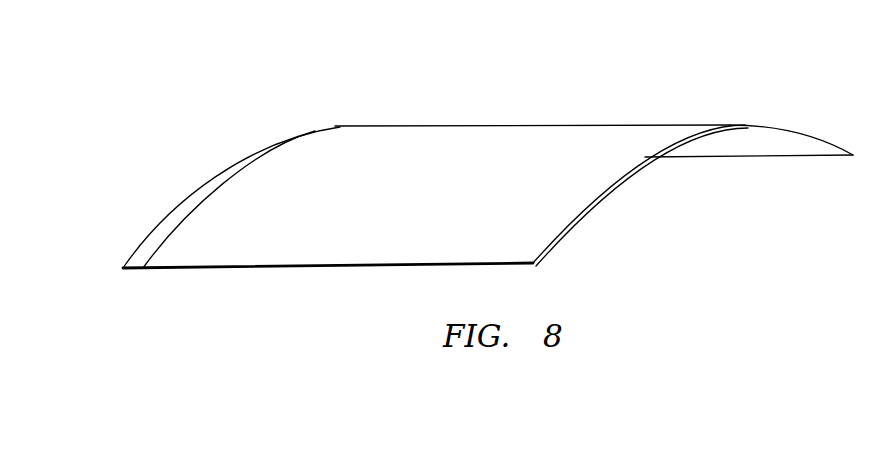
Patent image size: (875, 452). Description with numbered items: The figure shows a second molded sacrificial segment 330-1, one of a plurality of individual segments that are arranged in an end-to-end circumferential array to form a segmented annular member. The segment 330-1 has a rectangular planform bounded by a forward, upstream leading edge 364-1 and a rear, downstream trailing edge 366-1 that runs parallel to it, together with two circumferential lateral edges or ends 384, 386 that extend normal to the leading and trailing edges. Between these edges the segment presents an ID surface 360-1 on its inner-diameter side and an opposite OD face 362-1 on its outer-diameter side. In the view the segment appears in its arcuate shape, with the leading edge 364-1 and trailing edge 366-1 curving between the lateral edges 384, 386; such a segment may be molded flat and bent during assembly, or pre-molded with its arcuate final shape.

The segment 330-1 is at (255, 88).
The ID surface 360-1 is at (595, 189).
The OD face 362-1 is at (375, 153).
The leading edge 364-1 is at (187, 195).
The trailing edge 366-1 is at (583, 208).
The circumferential lateral edge 384 is at (817, 158).
The circumferential lateral edge 386 is at (327, 267).